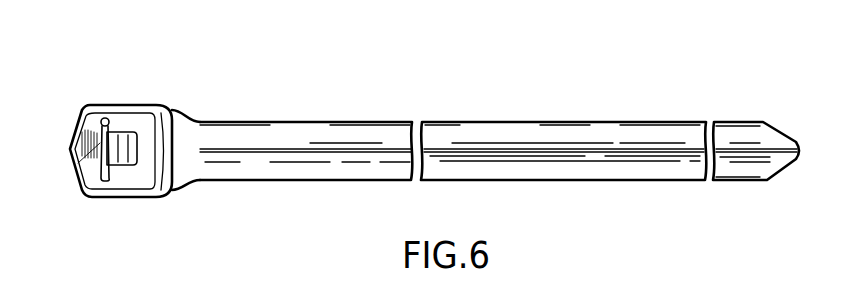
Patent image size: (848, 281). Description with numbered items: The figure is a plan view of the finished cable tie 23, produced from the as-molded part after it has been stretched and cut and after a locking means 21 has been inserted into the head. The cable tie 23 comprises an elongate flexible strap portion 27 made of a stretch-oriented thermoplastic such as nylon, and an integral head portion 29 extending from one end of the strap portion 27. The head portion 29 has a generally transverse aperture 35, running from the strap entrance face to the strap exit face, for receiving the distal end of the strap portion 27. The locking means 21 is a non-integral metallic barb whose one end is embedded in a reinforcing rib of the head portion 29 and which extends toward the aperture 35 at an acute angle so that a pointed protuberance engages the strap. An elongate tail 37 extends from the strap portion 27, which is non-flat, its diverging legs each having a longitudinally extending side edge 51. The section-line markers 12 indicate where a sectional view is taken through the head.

The section line indicator 12 is at (233, 142).
The locking means 21 is at (127, 146).
The cable tie 23 is at (487, 96).
The strap portion 27 is at (607, 170).
The head portion 29 is at (133, 197).
The aperture 35 is at (105, 118).
The tail 37 is at (752, 120).
The side edge 51 is at (353, 120).